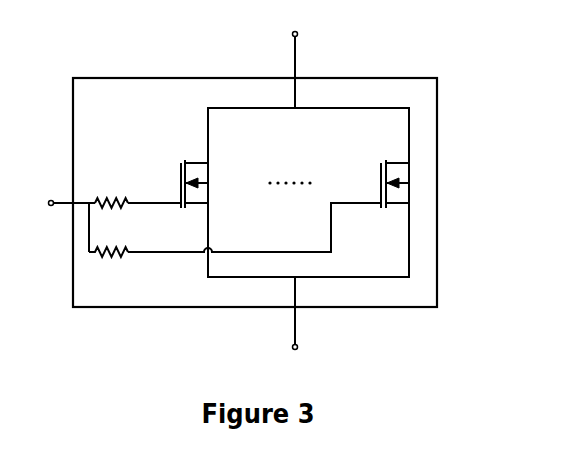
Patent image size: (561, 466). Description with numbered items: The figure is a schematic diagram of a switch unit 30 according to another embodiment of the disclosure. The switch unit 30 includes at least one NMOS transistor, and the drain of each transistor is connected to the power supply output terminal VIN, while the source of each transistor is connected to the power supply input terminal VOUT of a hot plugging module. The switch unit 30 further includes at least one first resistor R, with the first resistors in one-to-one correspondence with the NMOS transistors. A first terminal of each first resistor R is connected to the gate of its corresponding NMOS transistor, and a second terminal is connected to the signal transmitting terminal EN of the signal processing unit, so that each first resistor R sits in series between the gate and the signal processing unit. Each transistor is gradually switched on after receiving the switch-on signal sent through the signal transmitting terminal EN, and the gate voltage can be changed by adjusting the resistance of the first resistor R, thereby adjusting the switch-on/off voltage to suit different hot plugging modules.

The switch unit 30 is at (286, 192).
The first resistor R is at (235, 230).
The power supply output terminal VIN is at (295, 58).
The power supply input terminal VOUT is at (295, 329).
The signal transmitting terminal EN is at (55, 203).